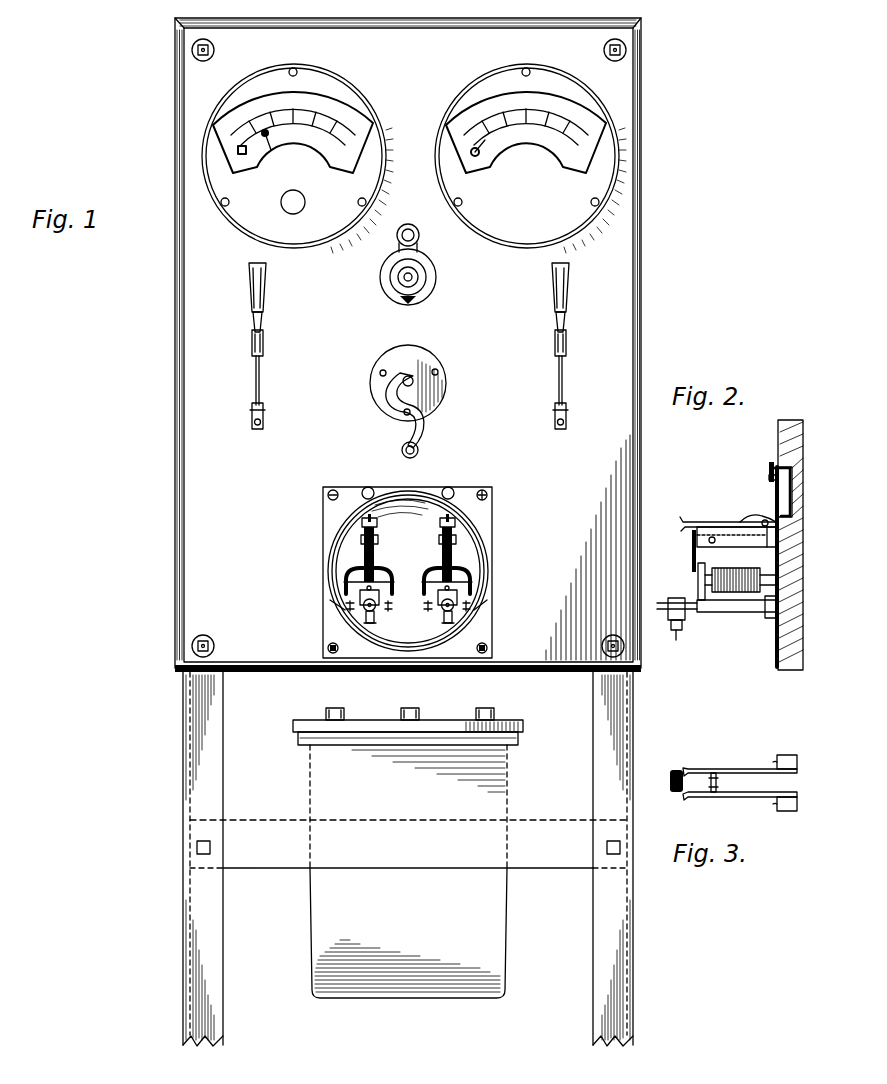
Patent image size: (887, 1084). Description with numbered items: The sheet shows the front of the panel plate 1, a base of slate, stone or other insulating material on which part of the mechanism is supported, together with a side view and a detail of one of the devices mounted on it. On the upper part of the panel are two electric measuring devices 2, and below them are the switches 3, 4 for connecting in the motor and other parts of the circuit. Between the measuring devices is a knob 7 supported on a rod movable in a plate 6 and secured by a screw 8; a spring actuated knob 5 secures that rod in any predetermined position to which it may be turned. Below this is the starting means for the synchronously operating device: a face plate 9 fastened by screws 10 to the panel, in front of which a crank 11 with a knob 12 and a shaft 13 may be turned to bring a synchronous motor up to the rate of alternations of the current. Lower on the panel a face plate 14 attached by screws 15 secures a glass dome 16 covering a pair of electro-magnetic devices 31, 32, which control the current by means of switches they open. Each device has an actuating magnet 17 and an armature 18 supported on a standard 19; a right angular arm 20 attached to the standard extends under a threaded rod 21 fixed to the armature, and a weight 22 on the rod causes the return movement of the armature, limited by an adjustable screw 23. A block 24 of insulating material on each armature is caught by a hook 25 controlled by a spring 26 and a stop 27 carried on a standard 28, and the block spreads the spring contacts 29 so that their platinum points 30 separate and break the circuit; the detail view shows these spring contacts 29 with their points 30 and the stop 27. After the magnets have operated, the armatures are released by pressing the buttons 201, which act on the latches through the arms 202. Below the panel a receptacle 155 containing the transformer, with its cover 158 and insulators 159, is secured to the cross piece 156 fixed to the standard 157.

In FIG. 1, the panel plate 1 is at (175, 248).
In FIG. 1, the electric measuring devices 2 is at (293, 66).
In FIG. 1, the switch 3 is at (252, 367).
In FIG. 1, the switch 4 is at (566, 367).
In FIG. 1, the spring actuated knob 5 is at (420, 237).
In FIG. 1, the plate 6 is at (432, 258).
In FIG. 1, the knob 7 is at (392, 273).
In FIG. 1, the screw 8 is at (418, 280).
In FIG. 1, the face plate 9 is at (426, 357).
In FIG. 1, the screws 10 is at (380, 373).
In FIG. 1, the crank 11 is at (418, 422).
In FIG. 1, the knob 12 is at (419, 452).
In FIG. 1, the shaft 13 is at (406, 375).
In FIG. 1, the face plate 14 is at (484, 512).
In FIG. 2, the face plate 14 is at (776, 468).
In FIG. 1, the screws 15 is at (328, 495).
In FIG. 1, the glass dome 16 is at (480, 555).
In FIG. 2, the actuating magnets 17 is at (736, 594).
In FIG. 1, the armatures 18 is at (382, 582).
In FIG. 2, the armatures 18 is at (698, 586).
In FIG. 2, the standards 19 is at (757, 612).
In FIG. 2, the right angular arms 20 is at (690, 616).
In FIG. 1, the threaded rods 21 is at (363, 613).
In FIG. 2, the threaded rods 21 is at (675, 612).
In FIG. 1, the weights 22 is at (438, 612).
In FIG. 2, the weights 22 is at (678, 630).
In FIG. 2, the adjustable screws 23 is at (687, 632).
In FIG. 1, the block 24 is at (362, 550).
In FIG. 2, the block 24 is at (692, 556).
In FIG. 1, the hook 25 is at (385, 527).
In FIG. 2, the hook 25 is at (723, 522).
In FIG. 2, the spring 26 is at (756, 518).
In FIG. 2, the stop 27 is at (760, 535).
In FIG. 3, the stop 27 is at (676, 768).
In FIG. 2, the standard 28 is at (798, 545).
In FIG. 1, the contact strips 29 is at (361, 539).
In FIG. 2, the contact strips 29 is at (740, 537).
In FIG. 3, the contact strips 29 is at (740, 783).
In FIG. 2, the platinum points 30 is at (711, 537).
In FIG. 3, the platinum points 30 is at (713, 792).
In FIG. 1, the electro-magnetic device 31 is at (319, 611).
In FIG. 1, the electro-magnetic device 32 is at (498, 611).
In FIG. 1, the receptacle 155 is at (507, 918).
In FIG. 1, the cross piece 156 is at (248, 830).
In FIG. 1, the standard 157 is at (208, 926).
In FIG. 1, the cover 158 is at (524, 728).
In FIG. 1, the insulators 159 is at (344, 712).
In FIG. 1, the buttons 201 is at (368, 487).
In FIG. 2, the buttons 201 is at (769, 470).
In FIG. 2, the arms 202 is at (780, 462).